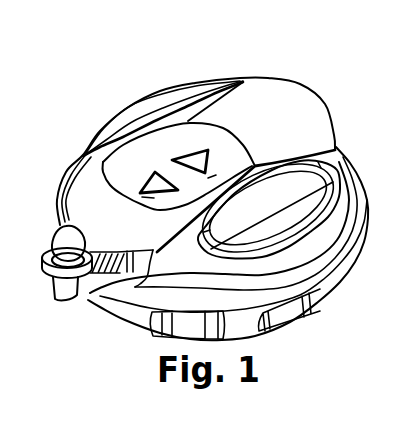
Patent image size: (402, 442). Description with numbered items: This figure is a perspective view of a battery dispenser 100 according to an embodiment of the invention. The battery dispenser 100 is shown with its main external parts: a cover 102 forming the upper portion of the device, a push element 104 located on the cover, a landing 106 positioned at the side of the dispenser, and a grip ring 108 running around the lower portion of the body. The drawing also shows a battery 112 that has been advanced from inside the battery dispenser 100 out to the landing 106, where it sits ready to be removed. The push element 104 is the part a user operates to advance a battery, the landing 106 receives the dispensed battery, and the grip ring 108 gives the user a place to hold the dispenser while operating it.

The battery dispenser 100 is at (78, 86).
The cover 102 is at (143, 102).
The push element 104 is at (93, 190).
The landing 106 is at (62, 299).
The grip ring 108 is at (133, 313).
The battery 112 is at (42, 265).